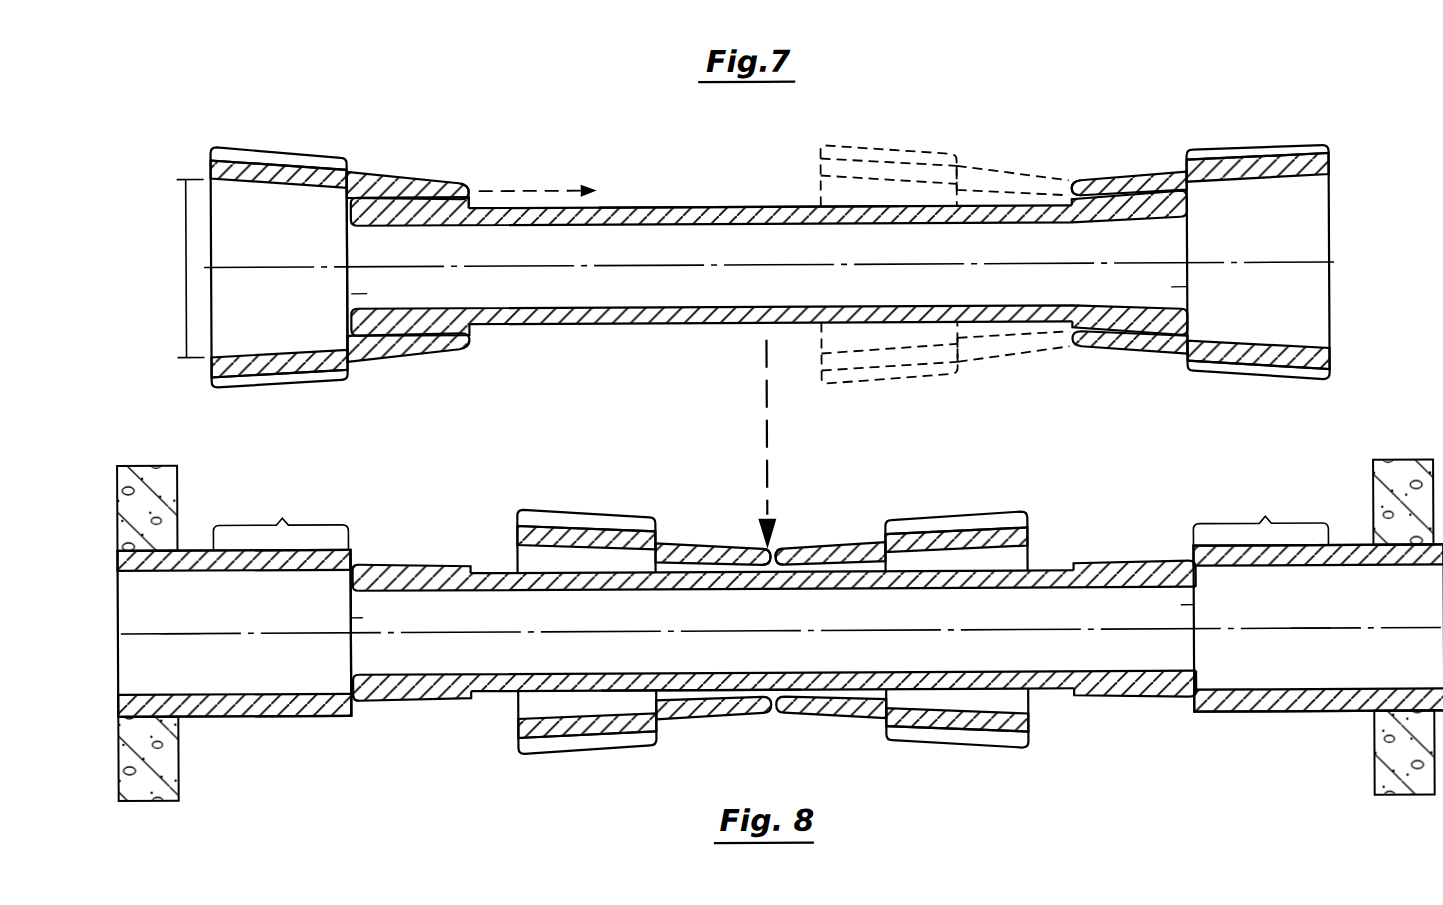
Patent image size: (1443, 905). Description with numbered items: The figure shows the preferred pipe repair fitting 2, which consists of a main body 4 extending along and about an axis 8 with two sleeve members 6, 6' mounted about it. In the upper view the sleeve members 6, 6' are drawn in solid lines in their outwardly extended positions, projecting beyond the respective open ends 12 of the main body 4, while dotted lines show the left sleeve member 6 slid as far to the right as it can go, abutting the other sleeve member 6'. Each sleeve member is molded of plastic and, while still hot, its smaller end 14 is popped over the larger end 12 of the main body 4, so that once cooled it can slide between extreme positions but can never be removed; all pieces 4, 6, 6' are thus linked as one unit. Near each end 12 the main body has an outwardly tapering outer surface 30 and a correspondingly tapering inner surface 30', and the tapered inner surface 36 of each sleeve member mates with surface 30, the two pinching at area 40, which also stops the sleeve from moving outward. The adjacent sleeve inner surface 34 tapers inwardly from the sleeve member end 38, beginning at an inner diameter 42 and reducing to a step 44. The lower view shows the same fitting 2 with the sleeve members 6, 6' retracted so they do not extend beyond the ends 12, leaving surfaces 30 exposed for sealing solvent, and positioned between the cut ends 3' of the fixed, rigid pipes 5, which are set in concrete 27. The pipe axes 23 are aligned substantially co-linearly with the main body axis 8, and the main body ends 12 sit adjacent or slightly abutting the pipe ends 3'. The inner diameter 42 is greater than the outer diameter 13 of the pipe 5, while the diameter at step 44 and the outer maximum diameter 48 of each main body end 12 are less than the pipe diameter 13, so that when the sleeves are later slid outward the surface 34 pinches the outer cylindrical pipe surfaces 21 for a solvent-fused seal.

In FIG. 7, the fitting 2 is at (606, 112).
In FIG. 8, the fitting 2 is at (594, 778).
In FIG. 8, the new pipe ends 3' is at (773, 629).
In FIG. 7, the main body 4 is at (727, 198).
In FIG. 8, the main body 4 is at (555, 698).
In FIG. 8, the pipes 5 is at (193, 541).
In FIG. 7, the sleeve member 6 is at (591, 225).
In FIG. 8, the sleeve member 6 is at (587, 596).
In FIG. 7, the sleeve member 6' is at (1258, 222).
In FIG. 8, the sleeve member 6' is at (957, 593).
In FIG. 7, the axis 8 is at (668, 265).
In FIG. 8, the axis 8 is at (685, 631).
In FIG. 7, the open ends of the main body 12 is at (352, 291).
In FIG. 8, the open ends of the main body 12 is at (350, 616).
In FIG. 8, the outer diameter of the pipe 13 is at (333, 538).
In FIG. 7, the smaller ends of the sleeve members 14 is at (472, 186).
In FIG. 8, the smaller ends of the sleeve members 14 is at (768, 552).
In FIG. 8, the outer cylindrical surfaces of the pipes 21 is at (770, 515).
In FIG. 8, the pipe axes 23 is at (178, 631).
In FIG. 8, the concrete 27 is at (140, 462).
In FIG. 7, the outwardly tapering surfaces 30 is at (410, 266).
In FIG. 8, the outwardly tapering surfaces 30 is at (773, 546).
In FIG. 8, the inner surface 30' is at (774, 667).
In FIG. 7, the inner surface of the sleeve member 34 is at (268, 180).
In FIG. 8, the inner surface of the sleeve member 34 is at (577, 555).
In FIG. 7, the inner surface of the sleeve member 36 is at (402, 191).
In FIG. 8, the inner surface of the sleeve member 36 is at (678, 548).
In FIG. 7, the sleeve member end 38 is at (212, 161).
In FIG. 8, the sleeve member end 38 is at (517, 535).
In FIG. 7, the abutting area 40 is at (469, 212).
In FIG. 7, the inner diameter 42 is at (185, 244).
In FIG. 7, the step 44 is at (338, 197).
In FIG. 8, the outer maximum diameter of the main body end 48 is at (362, 553).